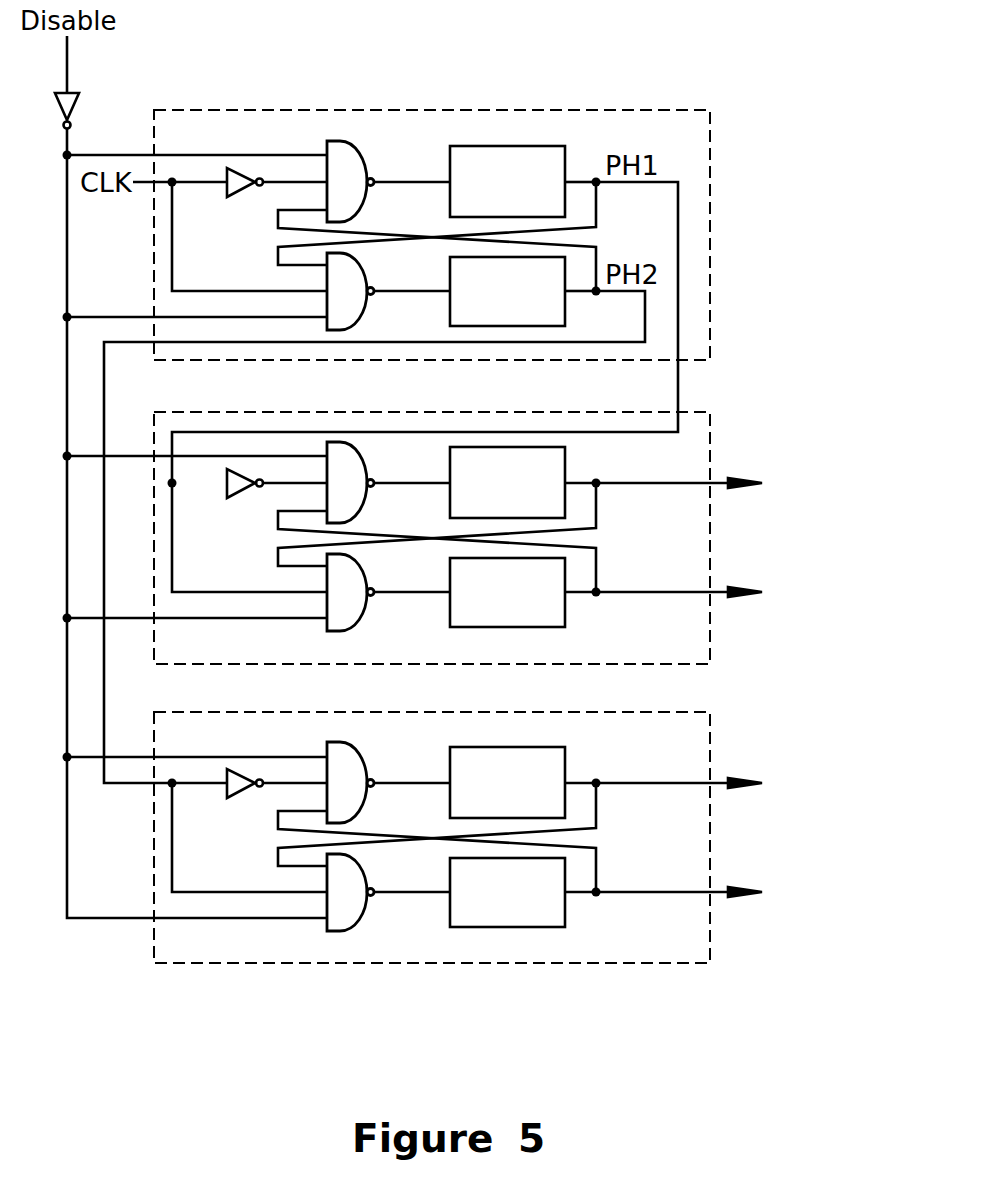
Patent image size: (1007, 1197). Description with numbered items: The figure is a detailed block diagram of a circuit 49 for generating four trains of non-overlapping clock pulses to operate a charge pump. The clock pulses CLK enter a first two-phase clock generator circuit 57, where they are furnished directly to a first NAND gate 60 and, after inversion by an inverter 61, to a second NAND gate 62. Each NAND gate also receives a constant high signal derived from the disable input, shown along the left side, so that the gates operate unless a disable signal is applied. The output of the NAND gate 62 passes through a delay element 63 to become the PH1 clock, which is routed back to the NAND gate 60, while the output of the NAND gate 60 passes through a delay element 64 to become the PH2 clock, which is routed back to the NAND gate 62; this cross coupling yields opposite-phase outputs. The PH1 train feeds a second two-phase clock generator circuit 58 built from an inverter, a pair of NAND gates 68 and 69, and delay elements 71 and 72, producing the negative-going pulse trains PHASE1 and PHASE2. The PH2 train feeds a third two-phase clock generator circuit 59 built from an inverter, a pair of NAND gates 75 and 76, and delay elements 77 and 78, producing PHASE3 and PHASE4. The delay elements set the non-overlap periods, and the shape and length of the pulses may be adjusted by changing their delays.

The circuit for generating clock pulses 49 is at (446, 87).
The first two-phase clock generator circuit 57 is at (218, 143).
The second two-phase clock generator circuit 58 is at (218, 660).
The third two-phase clock generator circuit 59 is at (218, 960).
The first NAND gate 60 is at (348, 305).
The inverter 61 is at (240, 186).
The second NAND gate 62 is at (348, 168).
The delay element 63 is at (523, 181).
The delay element 64 is at (523, 291).
The NAND gate 68 is at (348, 478).
The NAND gate 69 is at (348, 618).
The delay element 71 is at (660, 482).
The delay element 72 is at (660, 592).
The NAND gate 75 is at (348, 768).
The NAND gate 76 is at (348, 916).
The delay element 77 is at (660, 782).
The delay element 78 is at (660, 892).